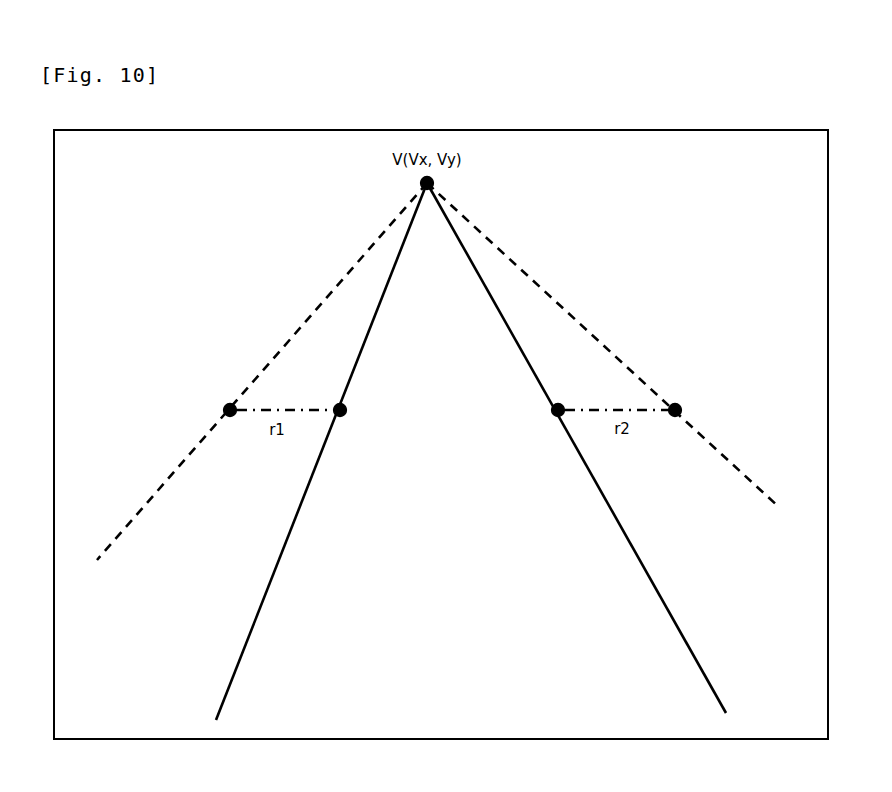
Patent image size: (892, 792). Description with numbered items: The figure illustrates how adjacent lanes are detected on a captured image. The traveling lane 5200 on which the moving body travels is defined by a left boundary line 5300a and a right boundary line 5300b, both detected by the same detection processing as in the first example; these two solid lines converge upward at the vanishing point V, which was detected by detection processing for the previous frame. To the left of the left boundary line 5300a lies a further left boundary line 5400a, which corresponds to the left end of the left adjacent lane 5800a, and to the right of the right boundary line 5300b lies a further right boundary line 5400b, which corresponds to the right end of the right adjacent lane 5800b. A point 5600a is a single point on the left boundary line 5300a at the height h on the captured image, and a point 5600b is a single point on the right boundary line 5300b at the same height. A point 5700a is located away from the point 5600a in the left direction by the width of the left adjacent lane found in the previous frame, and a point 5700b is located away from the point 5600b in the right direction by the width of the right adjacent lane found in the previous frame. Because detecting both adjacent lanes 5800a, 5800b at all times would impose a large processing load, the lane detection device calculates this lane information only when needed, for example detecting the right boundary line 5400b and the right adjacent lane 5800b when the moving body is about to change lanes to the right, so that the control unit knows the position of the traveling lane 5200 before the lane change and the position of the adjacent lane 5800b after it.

The traveling lane 5200 is at (437, 610).
The left boundary line 5300a is at (243, 645).
The right boundary line 5300b is at (652, 582).
The left boundary line 5400a is at (137, 514).
The right boundary line 5400b is at (755, 488).
The point 5600a is at (370, 433).
The point 5600b is at (524, 433).
The point 5700a is at (210, 381).
The point 5700b is at (691, 385).
The adjacent lane 5800a is at (351, 298).
The adjacent lane 5800b is at (555, 324).